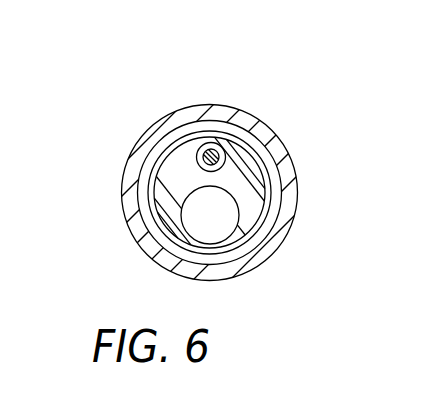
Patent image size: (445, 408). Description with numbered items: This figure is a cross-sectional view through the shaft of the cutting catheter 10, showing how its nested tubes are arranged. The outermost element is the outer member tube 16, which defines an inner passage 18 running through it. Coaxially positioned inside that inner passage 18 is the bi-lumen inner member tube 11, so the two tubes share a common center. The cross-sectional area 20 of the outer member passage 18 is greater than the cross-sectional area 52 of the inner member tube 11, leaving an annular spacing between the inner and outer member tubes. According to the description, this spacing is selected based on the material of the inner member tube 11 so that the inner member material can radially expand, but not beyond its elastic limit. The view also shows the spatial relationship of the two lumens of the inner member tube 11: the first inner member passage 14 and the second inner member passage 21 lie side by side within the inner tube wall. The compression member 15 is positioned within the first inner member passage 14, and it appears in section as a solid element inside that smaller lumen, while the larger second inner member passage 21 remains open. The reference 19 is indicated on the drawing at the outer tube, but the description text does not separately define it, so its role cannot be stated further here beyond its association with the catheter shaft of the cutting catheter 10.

The cutting catheter 10 is at (241, 70).
The bi-lumen inner member tube 11 is at (240, 151).
The first inner member passage 14 is at (195, 157).
The compression member 15 is at (204, 152).
The outer member tube 16 is at (252, 120).
The inner passage 18 is at (270, 193).
The catheter shaft 19 is at (111, 225).
The cross-sectional area 20 is at (283, 224).
The second inner member passage 21 is at (226, 226).
The cross-sectional area 52 is at (168, 168).